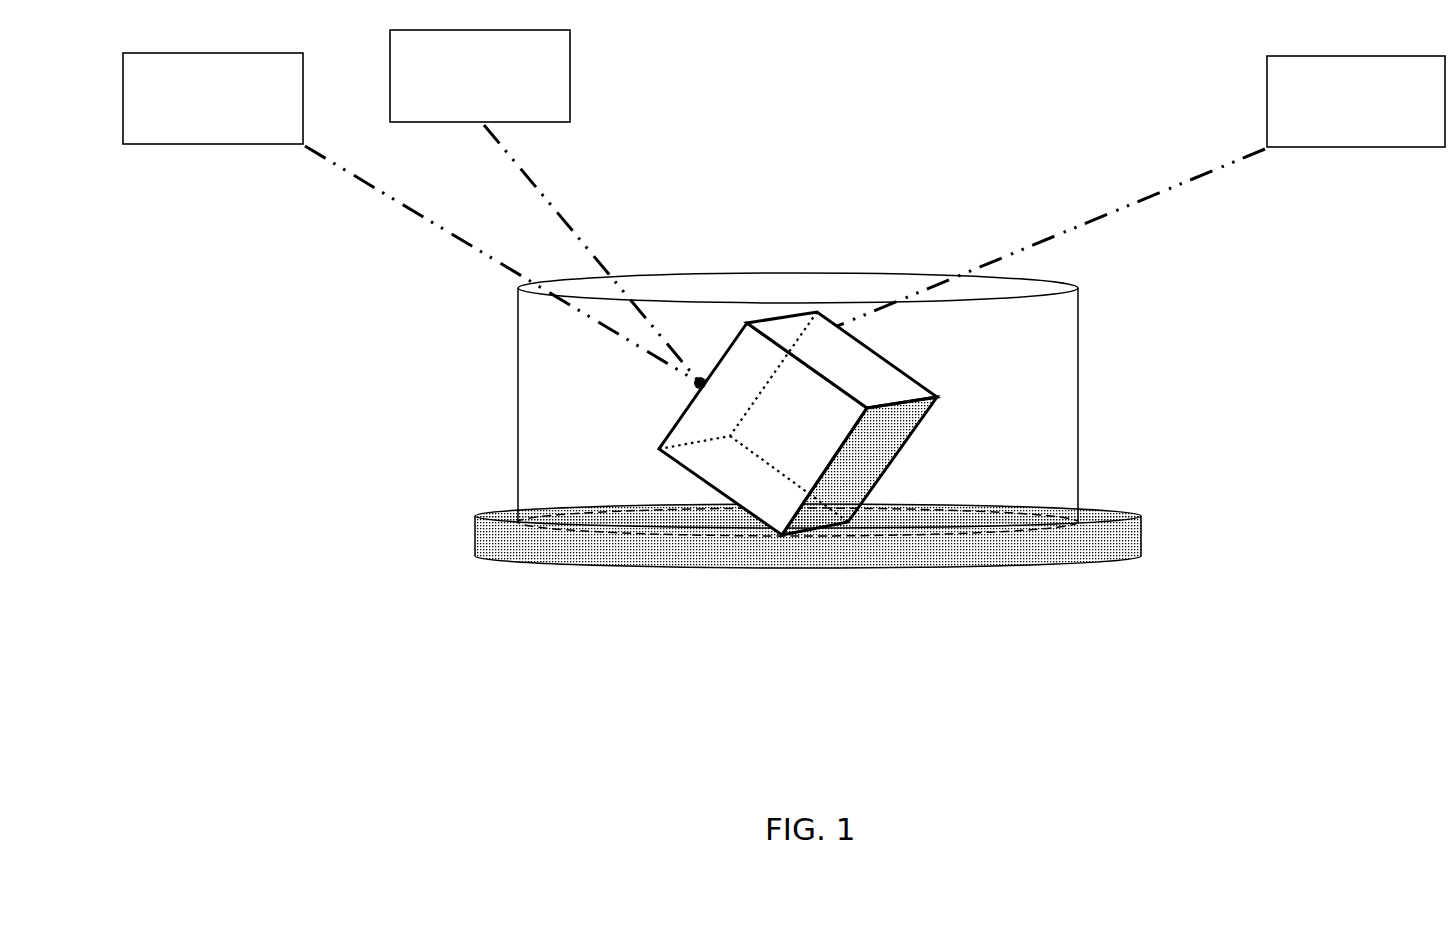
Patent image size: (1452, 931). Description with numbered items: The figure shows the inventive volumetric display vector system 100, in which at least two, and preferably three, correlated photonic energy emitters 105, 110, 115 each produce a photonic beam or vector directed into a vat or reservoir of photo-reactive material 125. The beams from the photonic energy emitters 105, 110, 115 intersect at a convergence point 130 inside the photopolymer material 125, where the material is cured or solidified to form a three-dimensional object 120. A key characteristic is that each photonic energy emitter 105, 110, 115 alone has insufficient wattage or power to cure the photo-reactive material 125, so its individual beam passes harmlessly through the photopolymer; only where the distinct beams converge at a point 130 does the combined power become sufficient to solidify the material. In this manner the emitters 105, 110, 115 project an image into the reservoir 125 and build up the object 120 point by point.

The volumetric display vector system 100 is at (784, 299).
The photonic energy emitter 105 is at (411, 218).
The photonic energy emitter 110 is at (1072, 219).
The photonic energy emitter 115 is at (545, 206).
The object 120 is at (885, 430).
The vat or reservoir of photo-reactive material 125 is at (517, 428).
The convergence point 130 is at (692, 391).